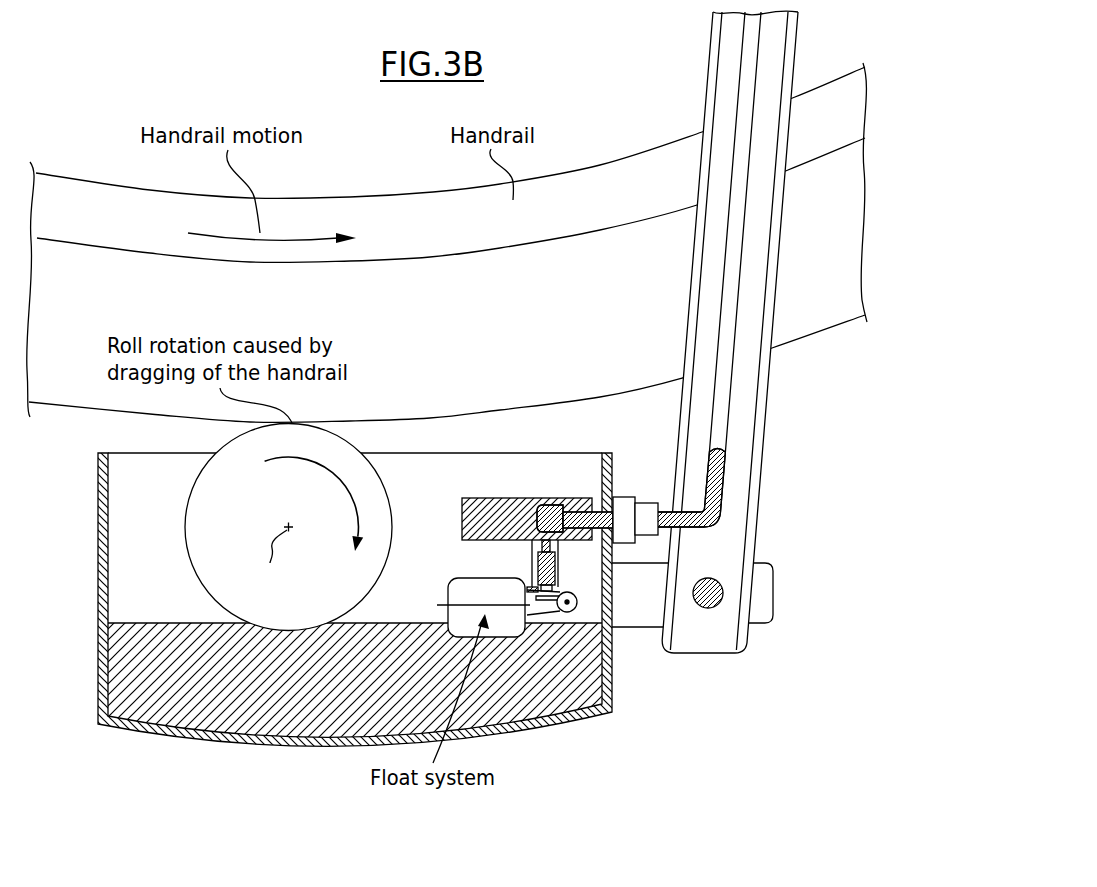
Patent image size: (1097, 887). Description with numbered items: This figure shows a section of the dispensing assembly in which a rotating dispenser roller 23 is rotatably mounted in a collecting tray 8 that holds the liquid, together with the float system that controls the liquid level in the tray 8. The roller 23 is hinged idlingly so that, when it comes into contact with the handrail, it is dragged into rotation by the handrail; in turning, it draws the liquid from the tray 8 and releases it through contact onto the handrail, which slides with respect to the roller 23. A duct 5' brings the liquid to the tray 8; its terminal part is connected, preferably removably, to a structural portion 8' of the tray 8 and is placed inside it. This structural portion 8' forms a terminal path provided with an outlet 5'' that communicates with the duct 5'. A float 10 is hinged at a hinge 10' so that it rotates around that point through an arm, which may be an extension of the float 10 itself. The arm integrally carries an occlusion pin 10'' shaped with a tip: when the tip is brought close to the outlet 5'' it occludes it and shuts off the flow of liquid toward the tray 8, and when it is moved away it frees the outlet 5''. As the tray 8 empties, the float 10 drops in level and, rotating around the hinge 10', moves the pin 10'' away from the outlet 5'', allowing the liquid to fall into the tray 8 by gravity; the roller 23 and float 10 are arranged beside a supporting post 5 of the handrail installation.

The handrail support post 5 is at (705, 356).
The duct 5' is at (736, 451).
The outlet 5'' is at (597, 423).
The collecting tray 8 is at (355, 618).
The structural portion 8' is at (527, 429).
The float 10 is at (532, 672).
The hinge 10' is at (595, 663).
The occlusion pin 10'' is at (608, 618).
The dispenser roller 23 is at (253, 509).